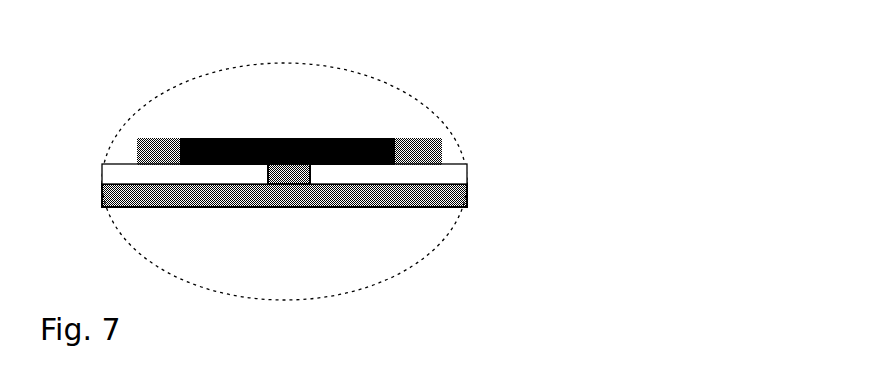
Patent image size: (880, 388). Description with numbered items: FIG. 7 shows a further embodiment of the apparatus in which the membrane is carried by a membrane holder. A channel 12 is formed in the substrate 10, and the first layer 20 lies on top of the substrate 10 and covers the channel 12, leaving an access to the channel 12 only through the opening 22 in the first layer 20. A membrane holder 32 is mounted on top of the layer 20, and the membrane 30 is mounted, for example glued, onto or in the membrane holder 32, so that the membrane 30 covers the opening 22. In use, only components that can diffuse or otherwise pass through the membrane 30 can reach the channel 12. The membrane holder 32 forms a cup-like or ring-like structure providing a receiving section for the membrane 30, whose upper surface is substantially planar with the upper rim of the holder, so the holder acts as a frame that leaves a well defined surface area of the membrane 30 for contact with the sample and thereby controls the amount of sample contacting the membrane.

The substrate 10 is at (284, 181).
The channel 12 is at (458, 192).
The first layer 20 is at (458, 170).
The opening 22 is at (292, 182).
The membrane 30 is at (357, 140).
The membrane holder 32 is at (423, 145).